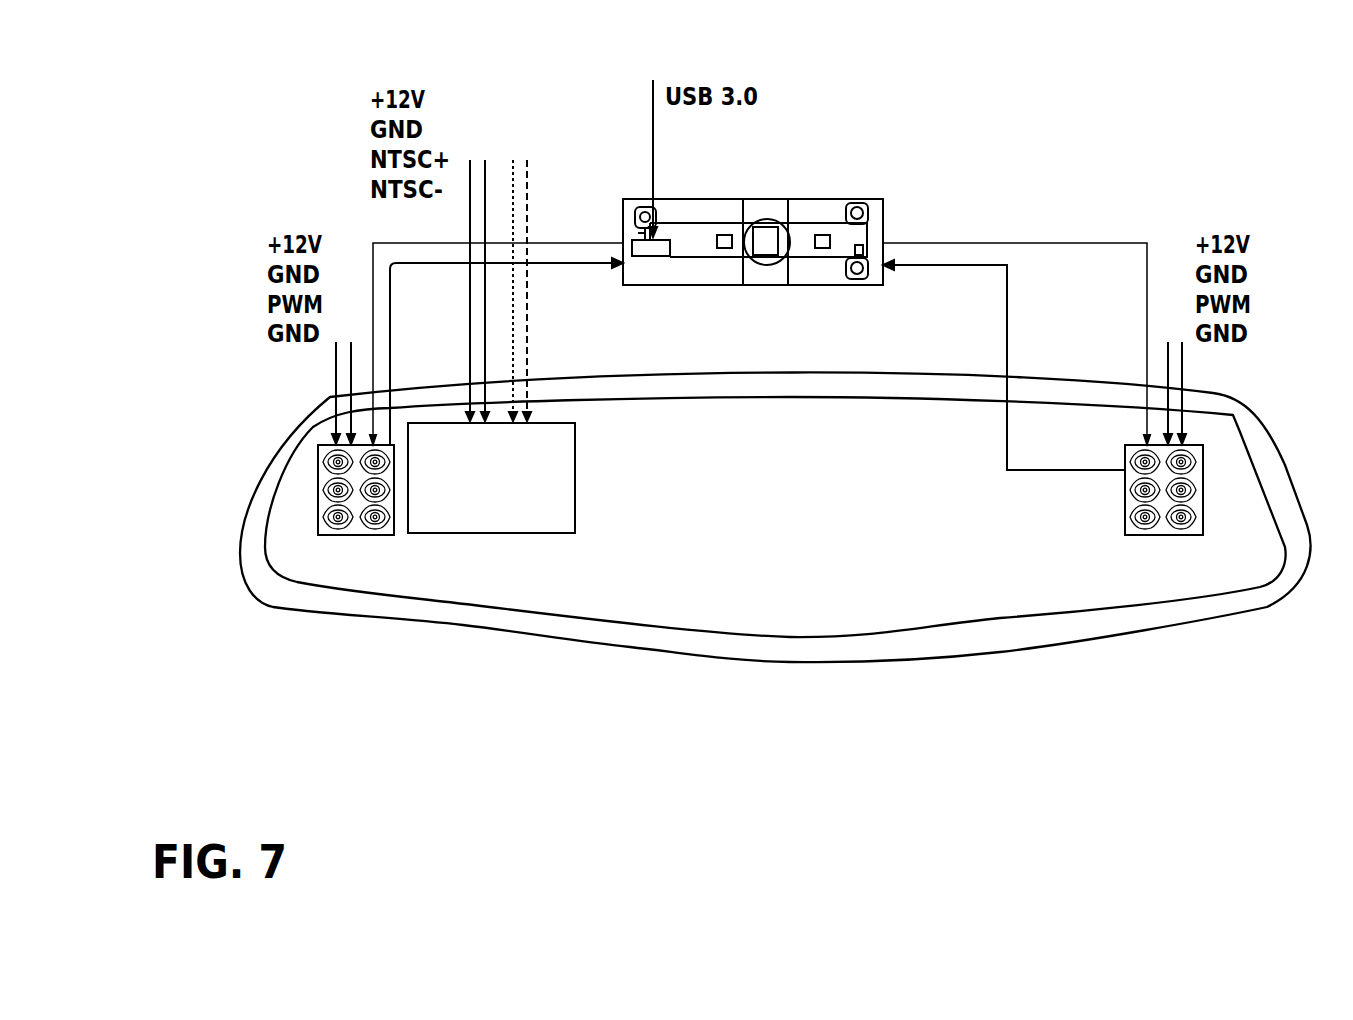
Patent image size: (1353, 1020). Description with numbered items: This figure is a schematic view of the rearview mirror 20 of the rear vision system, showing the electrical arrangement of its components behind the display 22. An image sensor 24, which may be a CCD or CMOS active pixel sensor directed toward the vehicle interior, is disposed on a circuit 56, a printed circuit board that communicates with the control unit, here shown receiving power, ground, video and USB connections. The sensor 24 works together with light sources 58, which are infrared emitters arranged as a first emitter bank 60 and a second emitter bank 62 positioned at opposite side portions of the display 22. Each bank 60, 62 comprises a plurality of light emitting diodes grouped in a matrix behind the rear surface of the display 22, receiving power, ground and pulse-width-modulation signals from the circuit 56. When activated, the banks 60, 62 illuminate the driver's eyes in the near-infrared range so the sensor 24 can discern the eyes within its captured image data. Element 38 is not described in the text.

The rearview mirror 20 is at (277, 137).
The display substrate 22 is at (757, 415).
The image sensor 24 is at (788, 204).
The display 38 is at (558, 423).
The circuit 56 is at (858, 242).
The light source 58 is at (767, 573).
The first emitter bank 60 is at (357, 503).
The second emitter bank 62 is at (1162, 503).